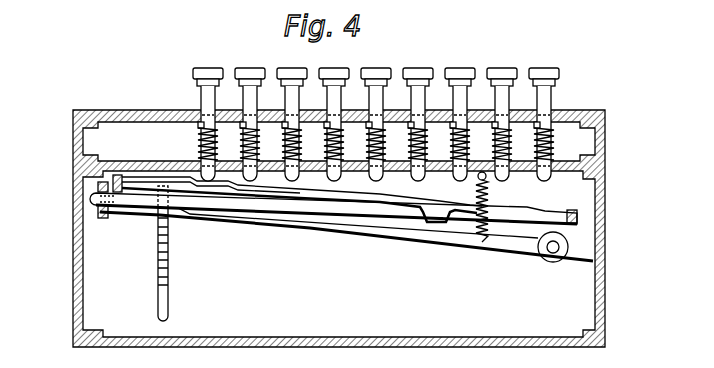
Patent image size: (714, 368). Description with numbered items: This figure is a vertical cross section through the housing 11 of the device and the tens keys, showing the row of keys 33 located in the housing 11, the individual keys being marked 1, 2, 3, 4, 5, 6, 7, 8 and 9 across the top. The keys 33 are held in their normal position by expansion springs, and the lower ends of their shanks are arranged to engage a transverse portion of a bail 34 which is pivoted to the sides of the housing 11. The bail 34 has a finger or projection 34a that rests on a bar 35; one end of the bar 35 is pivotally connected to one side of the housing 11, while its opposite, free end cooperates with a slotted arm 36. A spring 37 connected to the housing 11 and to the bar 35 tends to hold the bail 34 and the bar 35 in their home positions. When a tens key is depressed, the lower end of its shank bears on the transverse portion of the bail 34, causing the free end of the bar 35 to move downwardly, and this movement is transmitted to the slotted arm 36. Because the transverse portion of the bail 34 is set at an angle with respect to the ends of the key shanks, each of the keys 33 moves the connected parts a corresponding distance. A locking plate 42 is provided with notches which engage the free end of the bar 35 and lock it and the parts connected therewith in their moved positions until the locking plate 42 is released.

The housing 11 is at (584, 198).
The keys 33 is at (357, 105).
The bail 34 is at (302, 227).
The finger or projection 34a is at (418, 244).
The bar 35 is at (352, 226).
The slotted arm 36 is at (98, 210).
The spring 37 is at (494, 205).
The locking plate 42 is at (159, 296).
The key pin 1 is at (544, 118).
The key pin 2 is at (502, 118).
The key pin 3 is at (460, 118).
The key pin 4 is at (418, 118).
The key pin 5 is at (376, 118).
The key pin 6 is at (334, 118).
The key pin 7 is at (292, 118).
The key pin 8 is at (250, 118).
The key pin 9 is at (208, 118).